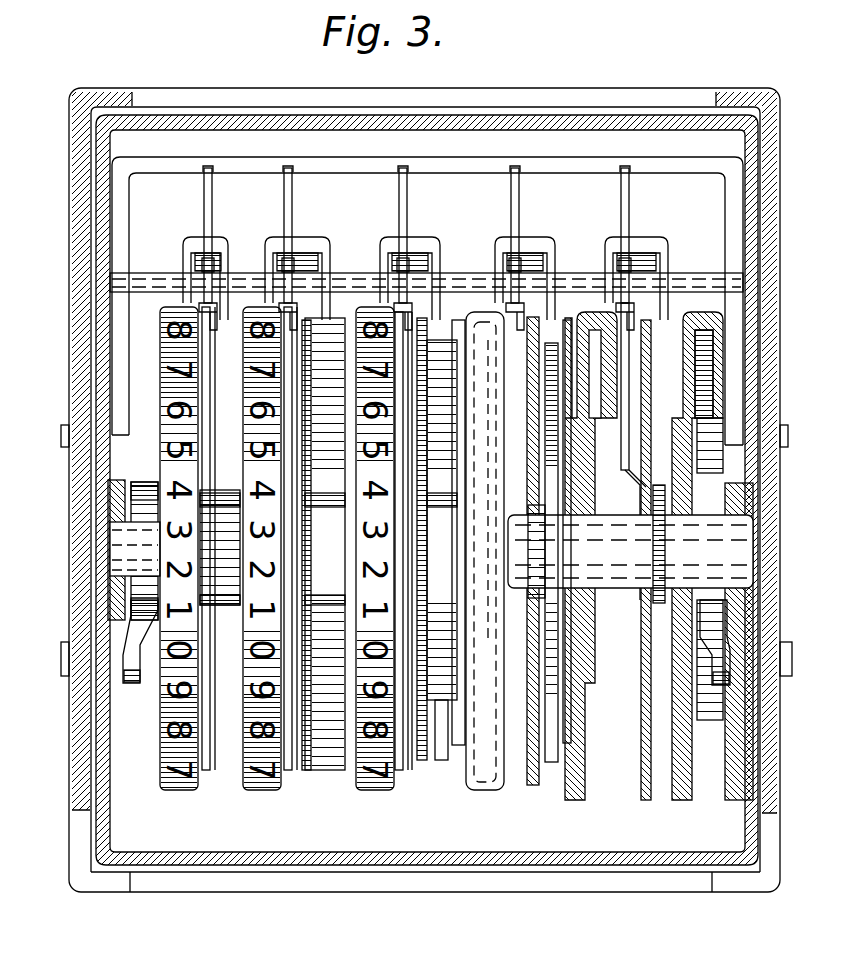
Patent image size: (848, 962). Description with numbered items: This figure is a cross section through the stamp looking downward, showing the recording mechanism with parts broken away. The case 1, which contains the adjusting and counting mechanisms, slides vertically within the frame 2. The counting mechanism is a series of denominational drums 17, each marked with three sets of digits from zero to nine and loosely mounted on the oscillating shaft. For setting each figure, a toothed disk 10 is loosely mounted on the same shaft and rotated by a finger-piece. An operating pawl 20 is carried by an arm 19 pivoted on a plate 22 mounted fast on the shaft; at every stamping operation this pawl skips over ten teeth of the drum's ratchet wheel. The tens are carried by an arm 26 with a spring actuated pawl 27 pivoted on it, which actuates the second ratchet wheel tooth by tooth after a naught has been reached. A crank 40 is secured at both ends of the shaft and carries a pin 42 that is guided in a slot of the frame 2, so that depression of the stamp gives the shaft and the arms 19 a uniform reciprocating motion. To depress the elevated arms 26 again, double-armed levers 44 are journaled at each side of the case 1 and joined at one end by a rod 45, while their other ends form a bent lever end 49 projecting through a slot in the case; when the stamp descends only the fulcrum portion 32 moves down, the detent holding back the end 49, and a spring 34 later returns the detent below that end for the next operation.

The case 1 is at (220, 122).
The frame 2 is at (95, 96).
The toothed disk 10 is at (302, 787).
The drum 17 is at (253, 790).
The arm 19 is at (437, 762).
The operating pawl 20 is at (456, 745).
The plate 22 is at (527, 808).
The arm 26 is at (512, 198).
The spring actuated pawl 27 is at (445, 355).
The fulcrum portion 32 is at (685, 274).
The spring 34 is at (382, 245).
The crank 40 is at (131, 684).
The pin 42 is at (65, 650).
The double-armed lever 44 is at (124, 234).
The rod 45 is at (570, 163).
The bent lever end 49 is at (68, 437).